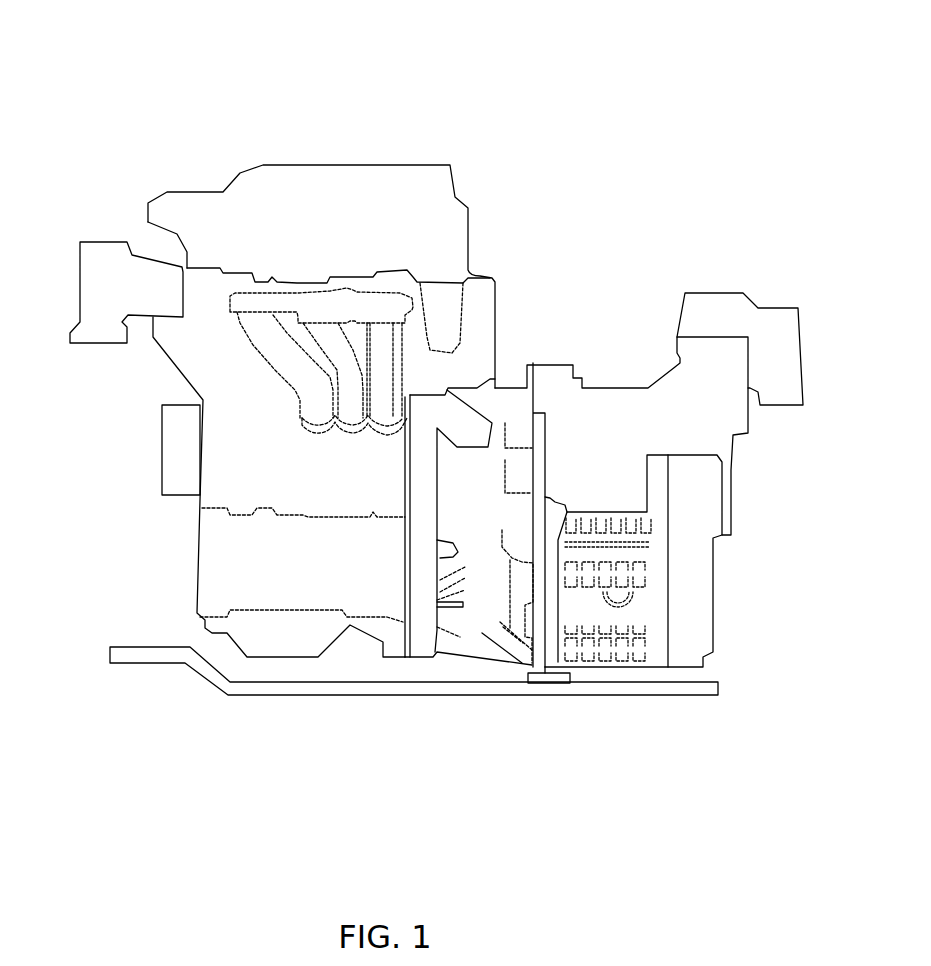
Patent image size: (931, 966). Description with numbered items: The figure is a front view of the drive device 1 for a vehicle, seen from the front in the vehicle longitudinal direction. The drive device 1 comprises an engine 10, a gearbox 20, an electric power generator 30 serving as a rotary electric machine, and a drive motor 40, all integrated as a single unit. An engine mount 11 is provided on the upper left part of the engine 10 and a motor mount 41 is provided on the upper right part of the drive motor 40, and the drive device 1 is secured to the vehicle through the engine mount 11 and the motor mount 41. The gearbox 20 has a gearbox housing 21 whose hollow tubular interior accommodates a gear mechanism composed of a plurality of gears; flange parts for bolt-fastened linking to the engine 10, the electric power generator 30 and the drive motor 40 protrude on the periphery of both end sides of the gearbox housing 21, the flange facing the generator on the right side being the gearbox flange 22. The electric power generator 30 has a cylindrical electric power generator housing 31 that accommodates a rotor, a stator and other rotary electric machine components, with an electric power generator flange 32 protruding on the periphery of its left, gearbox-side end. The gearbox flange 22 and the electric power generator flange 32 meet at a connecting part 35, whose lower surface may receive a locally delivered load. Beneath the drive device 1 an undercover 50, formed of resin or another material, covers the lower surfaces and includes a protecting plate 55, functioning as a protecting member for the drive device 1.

The drive device 1 is at (500, 115).
The engine 10 is at (193, 222).
The engine mount 11 is at (107, 275).
The gearbox 20 is at (477, 637).
The gearbox housing 21 is at (442, 667).
The gearbox flange 22 is at (538, 680).
The electric power generator 30 is at (622, 636).
The electric power generator housing 31 is at (650, 668).
The electric power generator flange 32 is at (552, 688).
The connecting part 35 is at (546, 491).
The drive motor 40 is at (612, 400).
The motor mount 41 is at (765, 337).
The undercover 50 is at (298, 697).
The protecting plate 55 is at (543, 685).